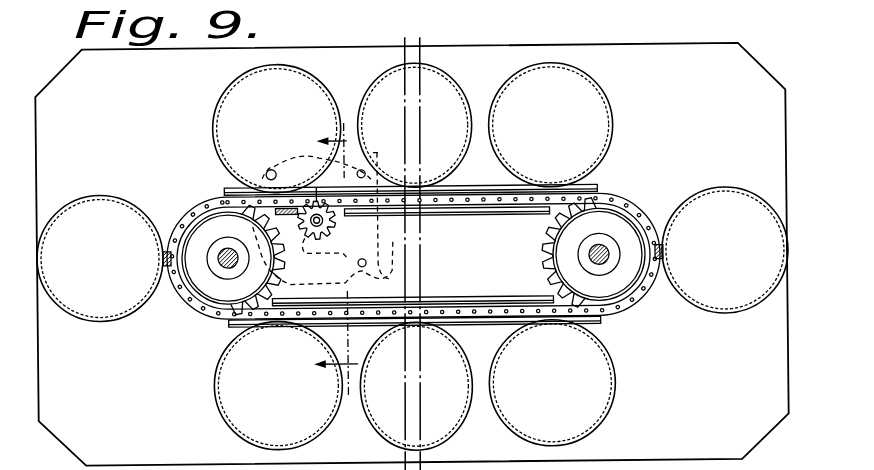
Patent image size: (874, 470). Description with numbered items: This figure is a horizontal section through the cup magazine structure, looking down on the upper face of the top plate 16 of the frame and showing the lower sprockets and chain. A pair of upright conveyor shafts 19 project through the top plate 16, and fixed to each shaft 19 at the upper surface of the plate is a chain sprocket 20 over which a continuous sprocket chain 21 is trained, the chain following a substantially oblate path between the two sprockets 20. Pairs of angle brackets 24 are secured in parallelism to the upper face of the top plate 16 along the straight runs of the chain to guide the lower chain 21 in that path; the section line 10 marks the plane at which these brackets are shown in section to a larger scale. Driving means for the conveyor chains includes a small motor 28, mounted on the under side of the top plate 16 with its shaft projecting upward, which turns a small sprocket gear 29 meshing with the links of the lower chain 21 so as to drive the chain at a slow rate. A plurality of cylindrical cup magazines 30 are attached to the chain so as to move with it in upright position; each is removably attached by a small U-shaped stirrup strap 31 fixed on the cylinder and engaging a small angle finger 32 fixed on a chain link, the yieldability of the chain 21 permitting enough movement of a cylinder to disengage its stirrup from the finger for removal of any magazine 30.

The section line 10 is at (338, 261).
The top plate 16 is at (722, 399).
The conveyor shaft 19 is at (228, 253).
The chain sprocket 20 is at (226, 292).
The sprocket chain 21 is at (178, 296).
The angle brackets 24 is at (475, 212).
The motor 28 is at (330, 225).
The sprocket gear 29 is at (312, 238).
The cup magazine 30 is at (222, 98).
The stirrup strap 31 is at (163, 258).
The angle finger 32 is at (176, 262).